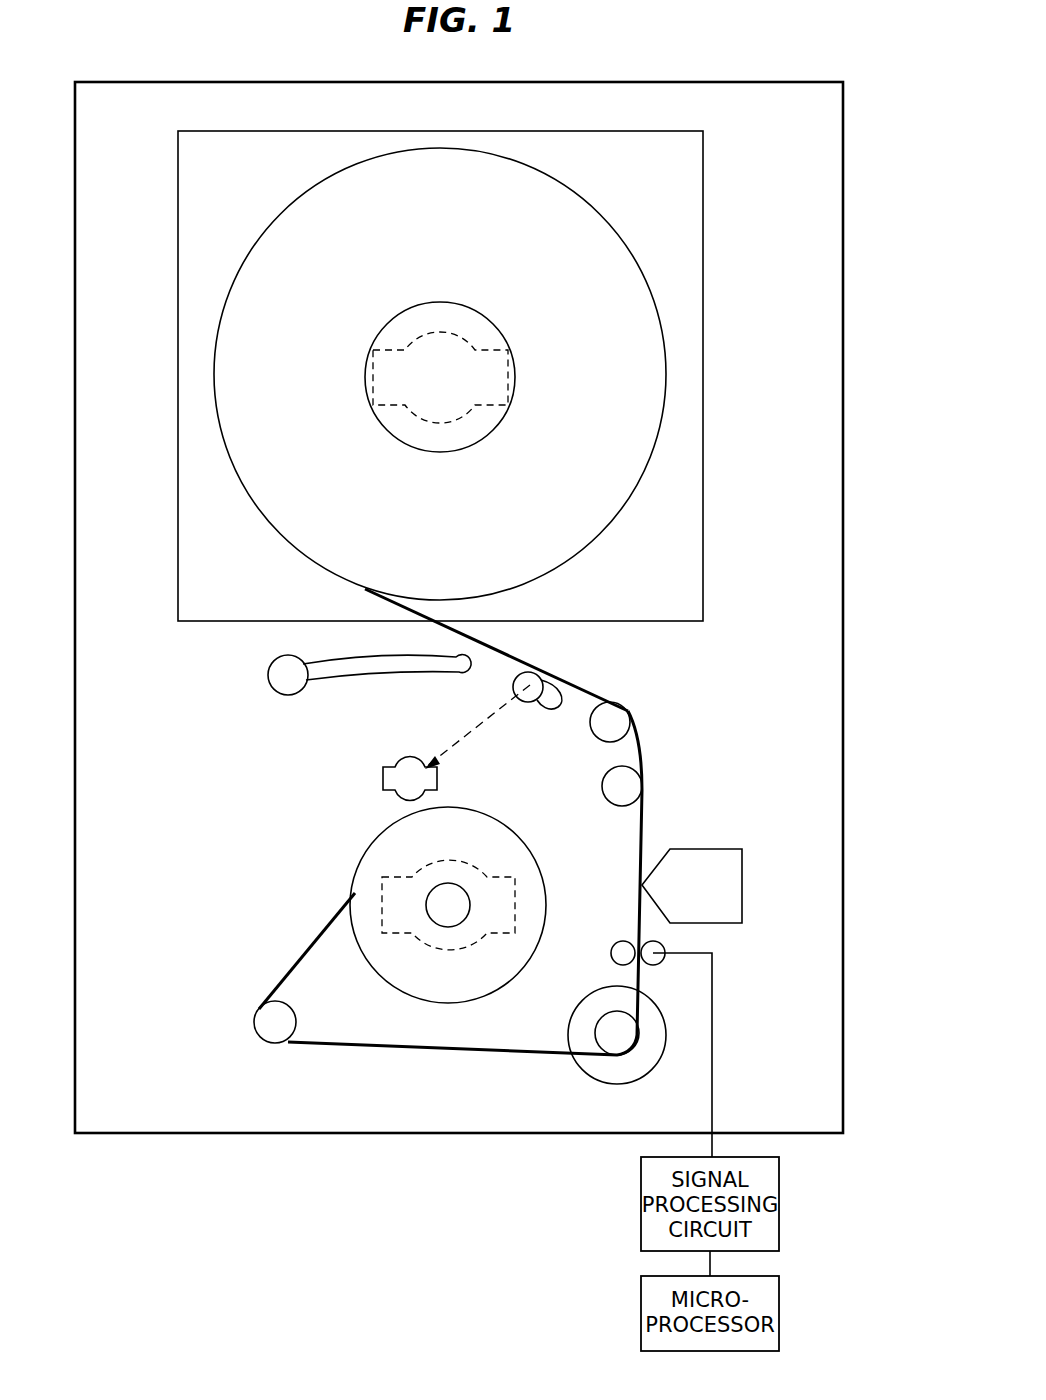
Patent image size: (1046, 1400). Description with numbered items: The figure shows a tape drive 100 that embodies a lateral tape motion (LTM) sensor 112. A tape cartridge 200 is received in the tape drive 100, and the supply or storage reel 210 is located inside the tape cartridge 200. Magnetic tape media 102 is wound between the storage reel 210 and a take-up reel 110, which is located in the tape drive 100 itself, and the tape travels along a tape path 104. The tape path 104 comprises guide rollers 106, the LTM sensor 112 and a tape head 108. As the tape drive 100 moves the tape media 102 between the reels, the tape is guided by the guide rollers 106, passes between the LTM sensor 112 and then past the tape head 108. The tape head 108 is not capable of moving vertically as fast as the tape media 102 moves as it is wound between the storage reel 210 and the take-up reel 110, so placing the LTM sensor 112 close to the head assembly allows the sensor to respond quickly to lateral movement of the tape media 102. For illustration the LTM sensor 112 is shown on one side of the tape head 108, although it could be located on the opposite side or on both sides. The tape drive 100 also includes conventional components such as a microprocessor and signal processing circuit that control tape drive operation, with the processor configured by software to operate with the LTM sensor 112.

The tape drive 100 is at (400, 1133).
The magnetic tape media 102 is at (400, 600).
The tape path 104 is at (618, 668).
The guide rollers 106 is at (623, 707).
The tape head 108 is at (742, 880).
The take-up reel 110 is at (477, 1000).
The LTM sensor 112 is at (614, 948).
The tape cartridge 200 is at (686, 202).
The storage reel 210 is at (598, 540).